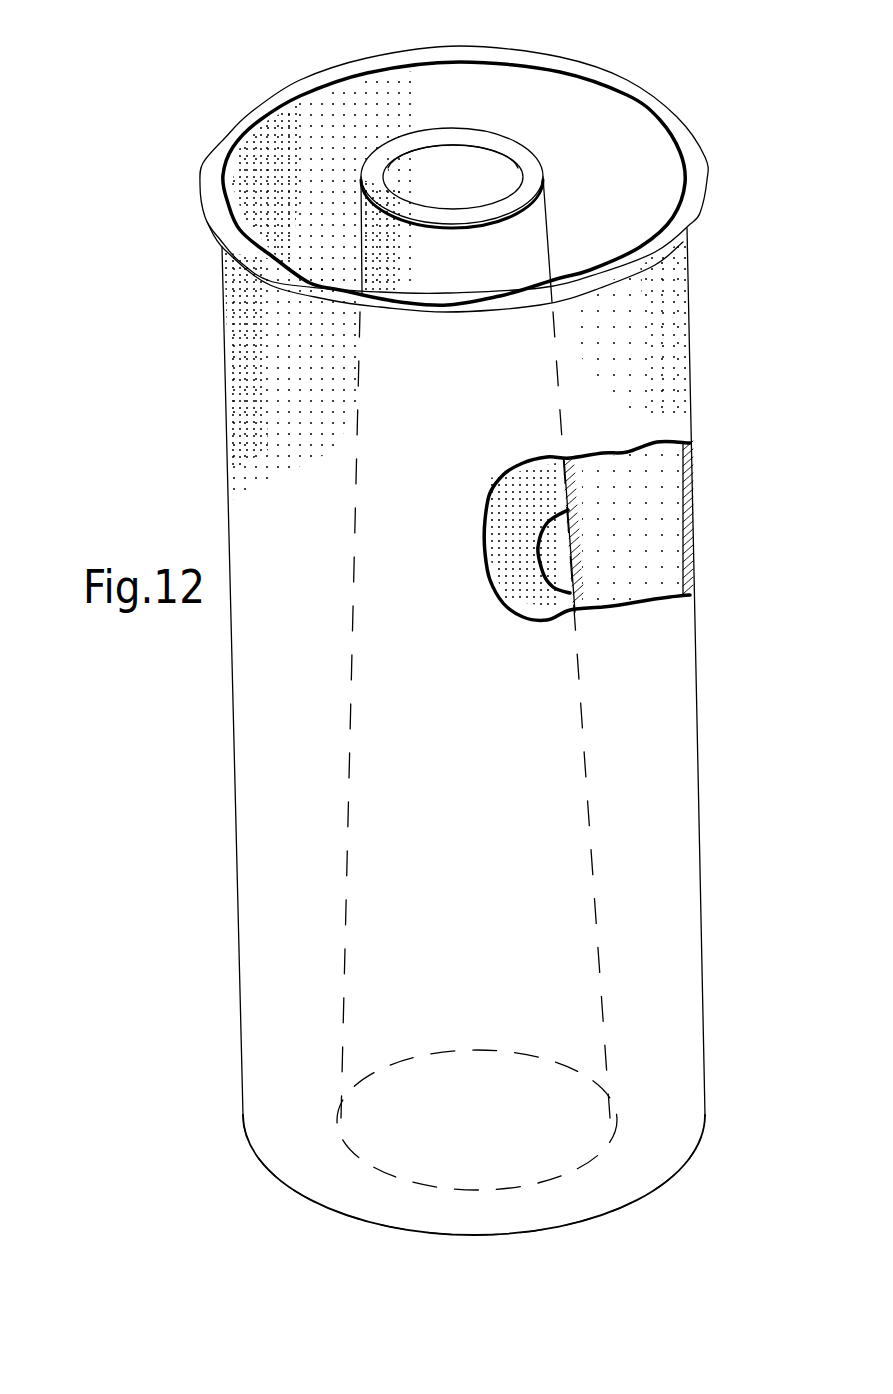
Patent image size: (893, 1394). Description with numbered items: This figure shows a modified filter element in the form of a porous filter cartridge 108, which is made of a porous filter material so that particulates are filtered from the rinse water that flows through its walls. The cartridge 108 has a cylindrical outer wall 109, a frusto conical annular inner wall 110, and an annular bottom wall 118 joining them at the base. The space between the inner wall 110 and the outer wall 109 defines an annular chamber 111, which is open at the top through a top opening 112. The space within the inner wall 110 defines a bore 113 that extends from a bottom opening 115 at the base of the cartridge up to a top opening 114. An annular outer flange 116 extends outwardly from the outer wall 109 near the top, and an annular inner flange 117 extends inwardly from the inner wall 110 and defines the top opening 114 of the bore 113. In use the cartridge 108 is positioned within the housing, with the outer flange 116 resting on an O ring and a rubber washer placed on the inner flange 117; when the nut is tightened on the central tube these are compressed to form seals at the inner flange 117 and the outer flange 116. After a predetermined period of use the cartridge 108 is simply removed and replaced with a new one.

The porous filter cartridge 108 is at (178, 172).
The cylindrical outer wall 109 is at (663, 380).
The frusto conical annular inner wall 110 is at (528, 225).
The annular chamber 111 is at (662, 517).
The top opening 112 is at (613, 123).
The bore 113 is at (548, 560).
The top opening 114 is at (482, 160).
The bottom opening 115 is at (545, 1180).
The annular outer flange 116 is at (238, 250).
The annular inner flange 117 is at (390, 163).
The annular bottom wall 118 is at (337, 1198).